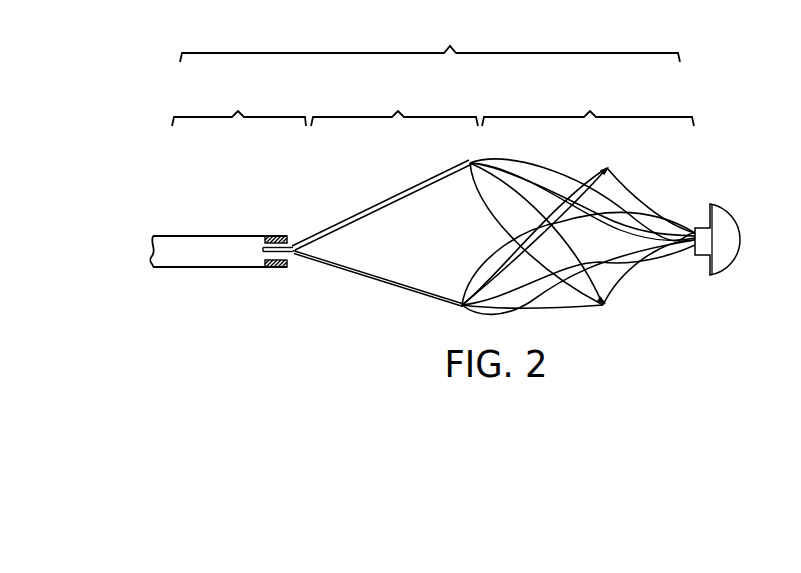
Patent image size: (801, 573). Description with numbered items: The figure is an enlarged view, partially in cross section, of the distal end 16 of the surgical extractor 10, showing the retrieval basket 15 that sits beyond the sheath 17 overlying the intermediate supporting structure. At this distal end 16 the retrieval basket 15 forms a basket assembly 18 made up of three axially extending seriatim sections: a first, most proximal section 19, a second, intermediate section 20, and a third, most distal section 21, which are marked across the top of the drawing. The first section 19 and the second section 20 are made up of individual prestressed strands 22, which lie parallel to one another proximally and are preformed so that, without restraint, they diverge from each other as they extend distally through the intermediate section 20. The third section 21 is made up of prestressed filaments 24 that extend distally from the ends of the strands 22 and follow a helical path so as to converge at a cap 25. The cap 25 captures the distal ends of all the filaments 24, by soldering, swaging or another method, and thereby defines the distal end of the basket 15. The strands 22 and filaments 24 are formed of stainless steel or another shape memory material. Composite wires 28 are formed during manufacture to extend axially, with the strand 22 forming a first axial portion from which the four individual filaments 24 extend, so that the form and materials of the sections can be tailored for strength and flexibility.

The surgical extractor 10 is at (218, 277).
The retrieval basket 15 is at (654, 193).
The distal end 16 is at (256, 226).
The sheath 17 is at (248, 268).
The basket assembly 18 is at (430, 38).
The first section 19 is at (239, 104).
The second section 20 is at (403, 332).
The third section 21 is at (578, 195).
The prestressed strands 22 is at (407, 195).
The prestressed filaments 24 is at (618, 238).
The cap 25 is at (744, 232).
The composite wires 28 is at (293, 259).